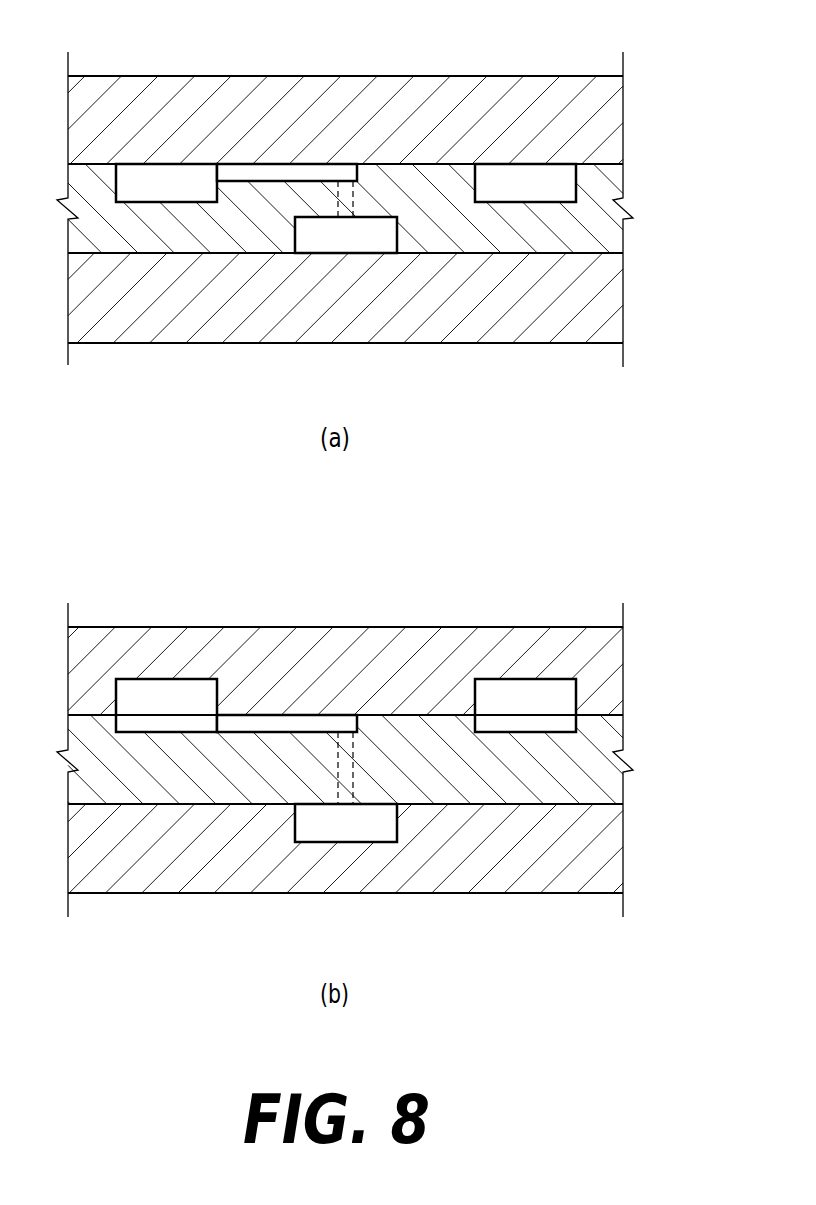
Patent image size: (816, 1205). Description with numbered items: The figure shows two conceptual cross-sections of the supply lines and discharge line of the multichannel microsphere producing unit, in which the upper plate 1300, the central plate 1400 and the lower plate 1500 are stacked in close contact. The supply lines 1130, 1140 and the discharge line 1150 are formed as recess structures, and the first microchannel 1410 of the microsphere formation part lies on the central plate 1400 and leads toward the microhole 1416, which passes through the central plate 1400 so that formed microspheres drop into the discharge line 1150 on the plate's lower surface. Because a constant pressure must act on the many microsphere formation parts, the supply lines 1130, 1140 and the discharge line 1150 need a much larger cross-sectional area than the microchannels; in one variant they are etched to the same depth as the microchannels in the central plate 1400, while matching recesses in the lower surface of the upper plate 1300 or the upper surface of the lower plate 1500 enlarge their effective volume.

The supply line 1130 is at (170, 172).
The supply line 1140 is at (521, 172).
The discharge line 1150 is at (347, 245).
The upper plate 1300 is at (620, 110).
The central plate 1400 is at (620, 181).
The first microchannel 1410 is at (282, 172).
The microhole 1416 is at (345, 192).
The lower plate 1500 is at (620, 293).